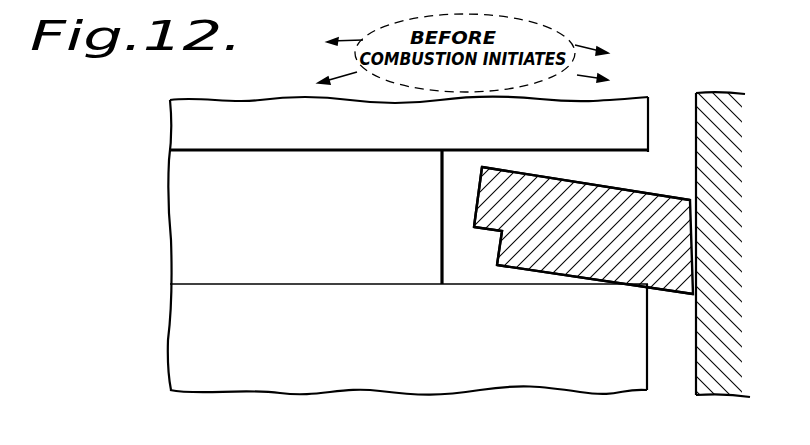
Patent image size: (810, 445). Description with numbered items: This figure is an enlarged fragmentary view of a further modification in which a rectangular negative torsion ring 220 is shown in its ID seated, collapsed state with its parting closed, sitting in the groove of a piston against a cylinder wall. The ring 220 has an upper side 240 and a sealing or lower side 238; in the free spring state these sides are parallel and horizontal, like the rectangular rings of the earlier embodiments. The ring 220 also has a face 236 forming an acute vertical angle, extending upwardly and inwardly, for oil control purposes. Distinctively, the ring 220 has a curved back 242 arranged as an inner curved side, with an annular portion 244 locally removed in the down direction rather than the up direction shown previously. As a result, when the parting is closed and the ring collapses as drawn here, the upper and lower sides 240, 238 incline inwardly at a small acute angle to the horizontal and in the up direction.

The negative torsion ring 220 is at (617, 200).
The face 236 is at (696, 217).
The sealing or lower side 238 is at (540, 270).
The upper side 240 is at (573, 183).
The curved back 242 is at (478, 190).
The annular portion 244 is at (497, 238).